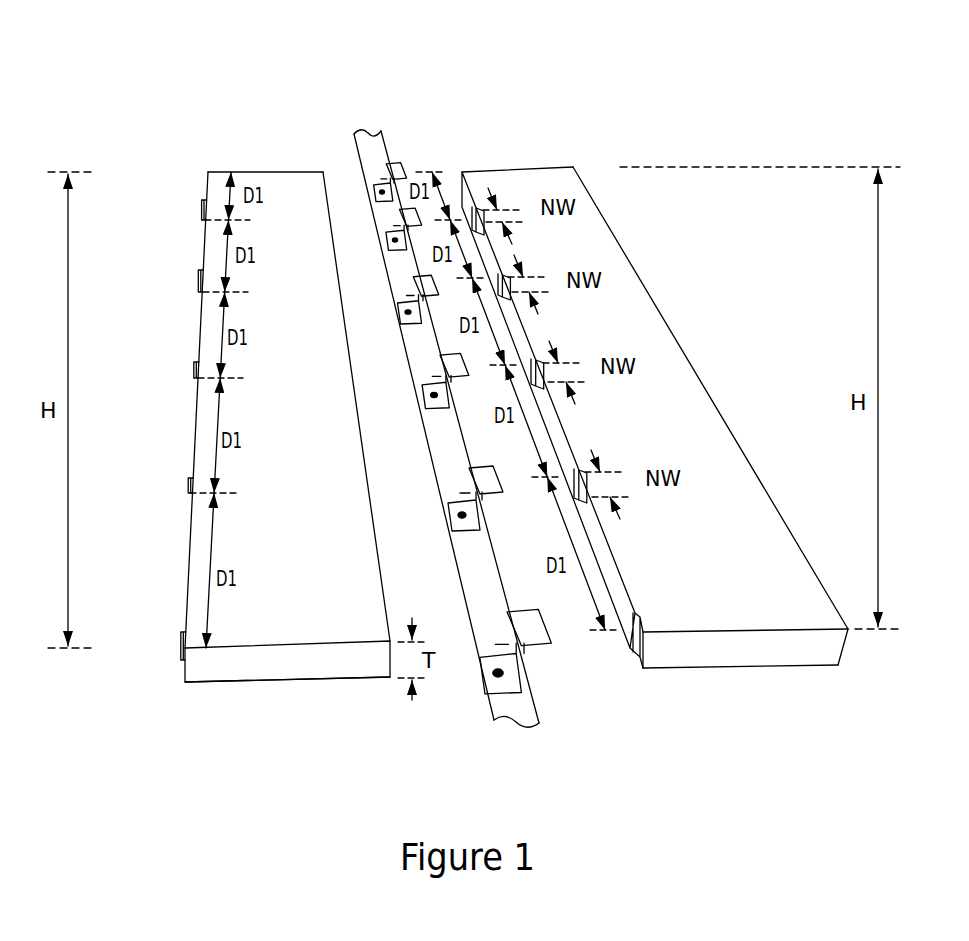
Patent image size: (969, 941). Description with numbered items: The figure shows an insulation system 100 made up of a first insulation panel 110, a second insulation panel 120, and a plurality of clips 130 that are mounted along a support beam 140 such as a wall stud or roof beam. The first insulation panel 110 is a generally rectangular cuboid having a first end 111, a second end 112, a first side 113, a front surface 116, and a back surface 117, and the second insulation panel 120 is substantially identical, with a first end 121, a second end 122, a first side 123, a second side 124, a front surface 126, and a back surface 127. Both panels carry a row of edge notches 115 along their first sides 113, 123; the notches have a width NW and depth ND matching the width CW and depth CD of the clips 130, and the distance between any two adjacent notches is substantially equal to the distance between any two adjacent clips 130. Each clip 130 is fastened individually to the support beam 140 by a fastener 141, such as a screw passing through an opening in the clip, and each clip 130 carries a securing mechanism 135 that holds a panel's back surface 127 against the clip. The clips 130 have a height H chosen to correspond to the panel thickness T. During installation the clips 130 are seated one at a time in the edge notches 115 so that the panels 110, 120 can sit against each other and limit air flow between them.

The insulation system 100 is at (160, 72).
The first insulation panel 110 is at (222, 160).
The first end 111 is at (283, 172).
The second end 112 is at (285, 665).
The first side 113 is at (195, 432).
The edge notches 115 is at (205, 168).
The front surface 116 is at (192, 566).
The back surface 117 is at (207, 690).
The second insulation panel 120 is at (498, 128).
The first end 121 is at (540, 168).
The second end 122 is at (737, 655).
The first side 123 is at (632, 622).
The second side 124 is at (692, 358).
The front surface 126 is at (728, 440).
The back surface 127 is at (800, 672).
The clips 130 is at (398, 152).
The securing mechanism 135 is at (373, 170).
The support beam 140 is at (366, 112).
The fasteners 141 is at (380, 190).